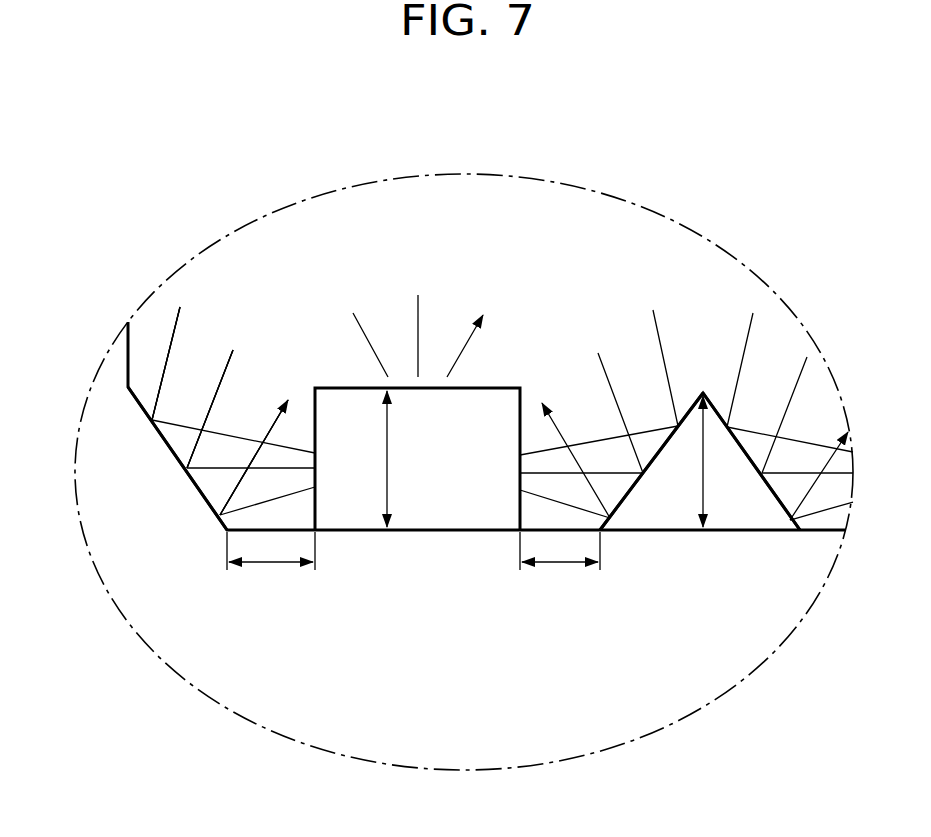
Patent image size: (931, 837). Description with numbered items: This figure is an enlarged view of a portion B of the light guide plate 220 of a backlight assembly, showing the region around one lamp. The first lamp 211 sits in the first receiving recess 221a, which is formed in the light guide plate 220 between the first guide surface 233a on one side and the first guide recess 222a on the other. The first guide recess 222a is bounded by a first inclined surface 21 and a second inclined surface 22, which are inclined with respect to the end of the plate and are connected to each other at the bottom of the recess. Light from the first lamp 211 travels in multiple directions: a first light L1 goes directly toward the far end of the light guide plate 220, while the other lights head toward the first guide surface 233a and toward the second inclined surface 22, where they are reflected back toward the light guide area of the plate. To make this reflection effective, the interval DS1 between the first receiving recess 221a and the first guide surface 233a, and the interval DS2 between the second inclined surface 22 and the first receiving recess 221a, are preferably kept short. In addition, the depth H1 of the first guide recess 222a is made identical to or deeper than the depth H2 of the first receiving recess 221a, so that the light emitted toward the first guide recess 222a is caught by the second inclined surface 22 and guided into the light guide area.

The portion B is at (700, 713).
The light guide plate 220 is at (126, 362).
The first guide surface 233a is at (200, 492).
The first receiving recess 221a is at (330, 388).
The first lamp 211 is at (415, 470).
The first light L1 is at (418, 340).
The second inclined surface 22 is at (635, 530).
The first guide recess 222a is at (658, 508).
The first inclined surface 21 is at (768, 530).
The depth of first receiving recess H2 is at (371, 459).
The depth of first guide recess H1 is at (690, 461).
The interval between first receiving recess and first guide surface DS1 is at (271, 551).
The interval between second inclined surface and first receiving recess DS2 is at (560, 551).